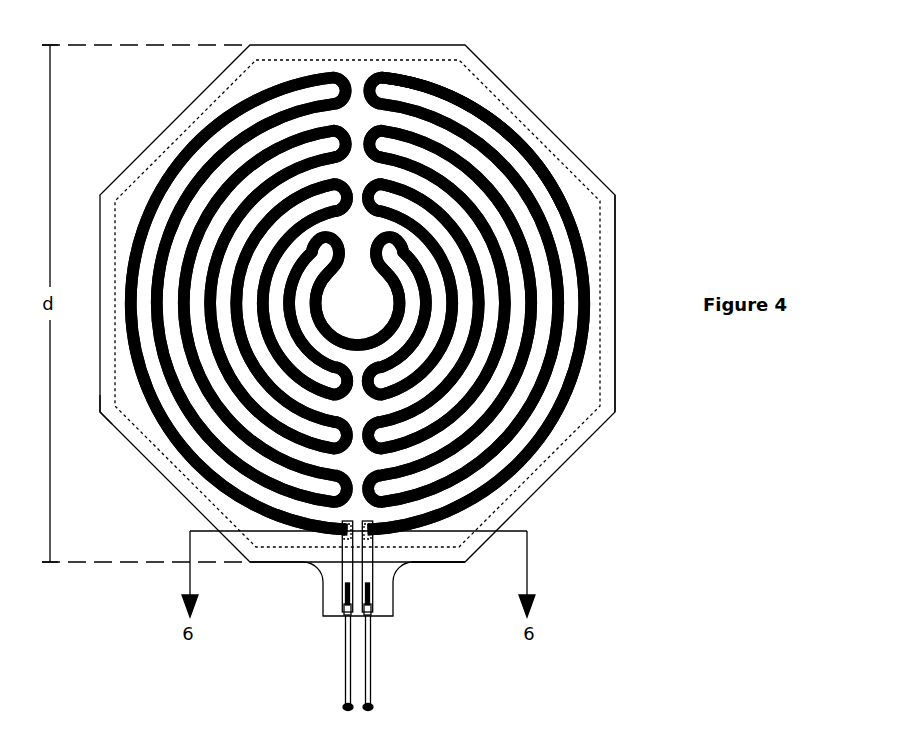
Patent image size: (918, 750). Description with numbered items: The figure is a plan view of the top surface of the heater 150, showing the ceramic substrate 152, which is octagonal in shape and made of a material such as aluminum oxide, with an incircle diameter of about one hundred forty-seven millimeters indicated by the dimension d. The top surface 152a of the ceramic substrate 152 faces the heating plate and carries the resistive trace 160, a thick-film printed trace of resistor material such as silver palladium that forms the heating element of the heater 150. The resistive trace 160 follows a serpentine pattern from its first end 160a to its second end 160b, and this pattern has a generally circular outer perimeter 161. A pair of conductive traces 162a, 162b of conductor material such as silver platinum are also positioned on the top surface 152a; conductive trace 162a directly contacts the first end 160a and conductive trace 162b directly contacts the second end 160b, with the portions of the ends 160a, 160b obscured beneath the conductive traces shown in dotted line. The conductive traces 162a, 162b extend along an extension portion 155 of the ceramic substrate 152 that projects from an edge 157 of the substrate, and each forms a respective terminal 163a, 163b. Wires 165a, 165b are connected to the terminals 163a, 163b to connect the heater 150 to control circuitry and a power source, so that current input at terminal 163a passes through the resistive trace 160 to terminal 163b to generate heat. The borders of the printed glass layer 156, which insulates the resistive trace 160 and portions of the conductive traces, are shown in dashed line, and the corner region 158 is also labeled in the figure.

The heater 150 is at (657, 57).
The ceramic substrate 152 is at (615, 348).
The top surface 152a is at (518, 108).
The extension portion 155 is at (322, 578).
The glass layer 156 is at (615, 232).
The edge 157 is at (447, 562).
The corner 158 is at (100, 411).
The resistive trace 160 is at (537, 203).
The first end 160a is at (343, 534).
The second end 160b is at (383, 538).
The outer perimeter 161 is at (548, 162).
The conductive trace 162a is at (343, 567).
The conductive trace 162b is at (368, 573).
The terminal 163a is at (345, 588).
The terminal 163b is at (371, 598).
The wire 165a is at (347, 660).
The wire 165b is at (371, 672).